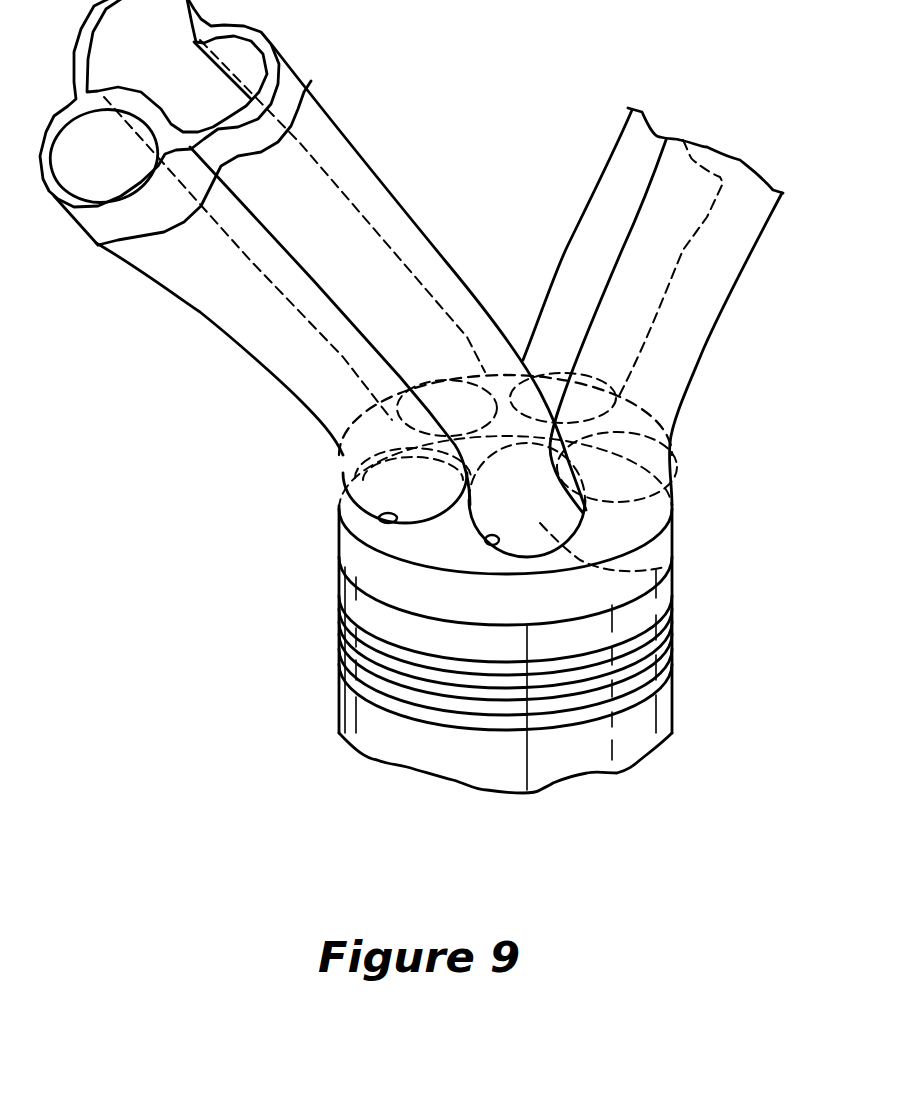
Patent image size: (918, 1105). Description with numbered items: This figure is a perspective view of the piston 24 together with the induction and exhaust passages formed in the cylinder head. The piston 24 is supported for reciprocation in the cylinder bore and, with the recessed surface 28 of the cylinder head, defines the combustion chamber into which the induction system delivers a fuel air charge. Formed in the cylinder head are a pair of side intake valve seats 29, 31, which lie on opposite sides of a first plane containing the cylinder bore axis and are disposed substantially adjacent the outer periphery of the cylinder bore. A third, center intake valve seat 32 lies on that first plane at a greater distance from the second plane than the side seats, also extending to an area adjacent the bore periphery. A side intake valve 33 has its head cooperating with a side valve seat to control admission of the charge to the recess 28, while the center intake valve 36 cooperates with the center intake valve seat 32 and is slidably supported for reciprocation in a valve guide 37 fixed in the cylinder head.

The piston 24 is at (673, 692).
The recessed surface 28 is at (617, 521).
The side intake valve seat 29 is at (495, 537).
The side intake valve seat 31 is at (440, 393).
The center intake valve seat 32 is at (385, 517).
The side intake valve 33 is at (665, 567).
The center intake valve 36 is at (387, 490).
The valve guide 37 is at (462, 405).